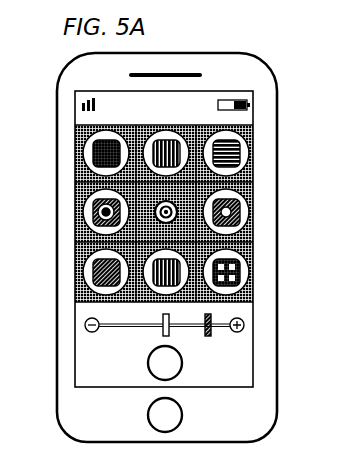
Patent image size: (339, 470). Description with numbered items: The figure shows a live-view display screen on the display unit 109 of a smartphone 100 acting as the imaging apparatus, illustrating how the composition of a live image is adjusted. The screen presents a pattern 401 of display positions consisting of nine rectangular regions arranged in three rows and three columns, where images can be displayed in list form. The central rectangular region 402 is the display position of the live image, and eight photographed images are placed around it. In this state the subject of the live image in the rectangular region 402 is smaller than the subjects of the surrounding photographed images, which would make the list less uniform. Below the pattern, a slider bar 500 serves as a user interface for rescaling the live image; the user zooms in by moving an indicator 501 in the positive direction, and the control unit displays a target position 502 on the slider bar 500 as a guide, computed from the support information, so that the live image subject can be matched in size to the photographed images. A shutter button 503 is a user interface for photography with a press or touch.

The smartphone 100 is at (277, 369).
The display unit 109 is at (207, 388).
The pattern 401 is at (244, 124).
The rectangular region 402 is at (183, 200).
The slider bar 500 is at (105, 330).
The indicator 501 is at (163, 335).
The target position 502 is at (210, 334).
The shutter button 503 is at (150, 355).